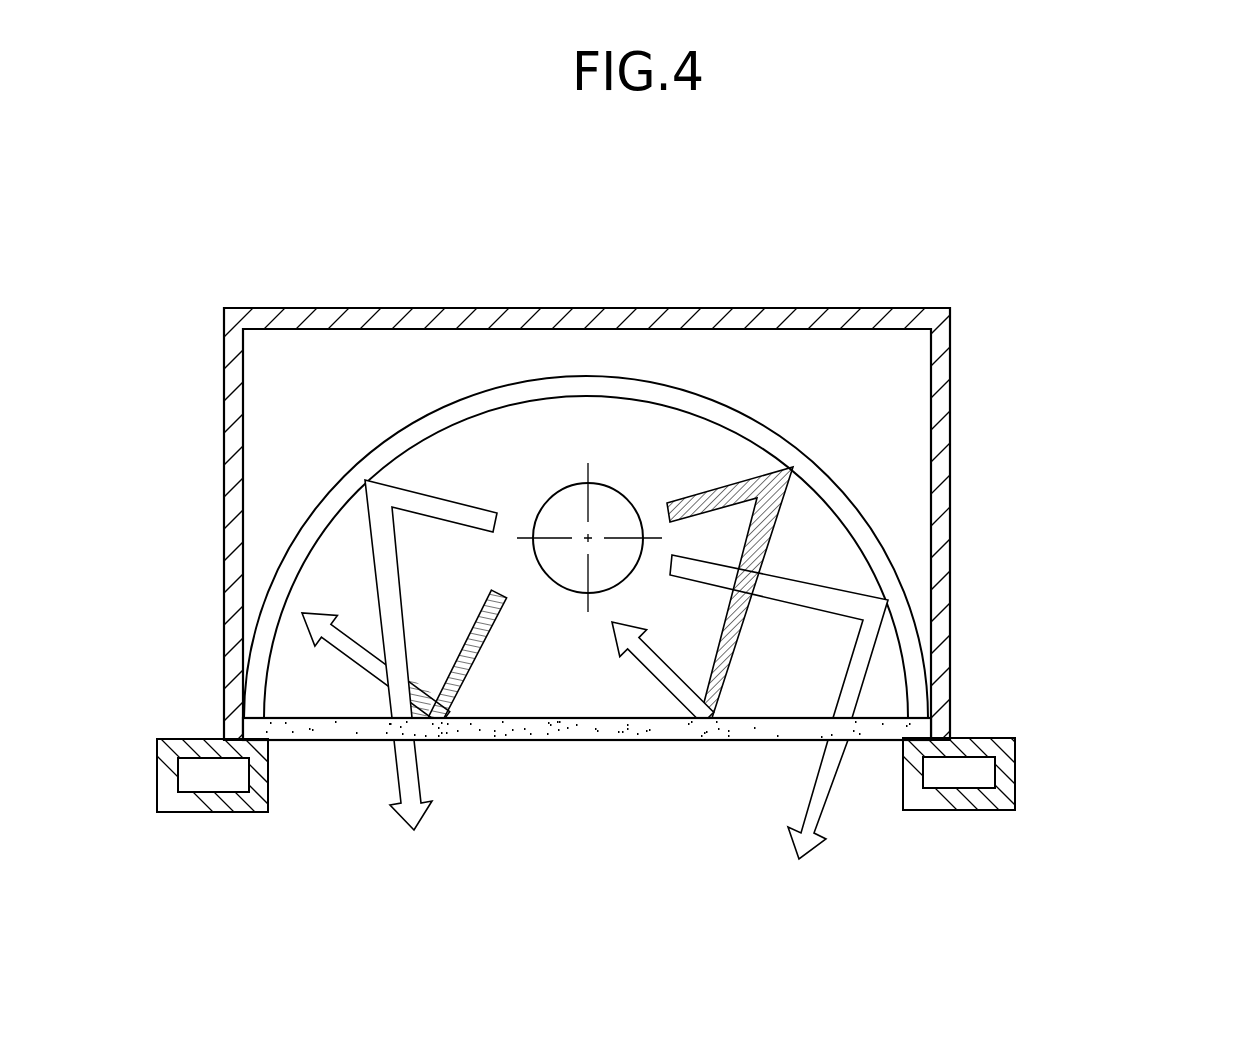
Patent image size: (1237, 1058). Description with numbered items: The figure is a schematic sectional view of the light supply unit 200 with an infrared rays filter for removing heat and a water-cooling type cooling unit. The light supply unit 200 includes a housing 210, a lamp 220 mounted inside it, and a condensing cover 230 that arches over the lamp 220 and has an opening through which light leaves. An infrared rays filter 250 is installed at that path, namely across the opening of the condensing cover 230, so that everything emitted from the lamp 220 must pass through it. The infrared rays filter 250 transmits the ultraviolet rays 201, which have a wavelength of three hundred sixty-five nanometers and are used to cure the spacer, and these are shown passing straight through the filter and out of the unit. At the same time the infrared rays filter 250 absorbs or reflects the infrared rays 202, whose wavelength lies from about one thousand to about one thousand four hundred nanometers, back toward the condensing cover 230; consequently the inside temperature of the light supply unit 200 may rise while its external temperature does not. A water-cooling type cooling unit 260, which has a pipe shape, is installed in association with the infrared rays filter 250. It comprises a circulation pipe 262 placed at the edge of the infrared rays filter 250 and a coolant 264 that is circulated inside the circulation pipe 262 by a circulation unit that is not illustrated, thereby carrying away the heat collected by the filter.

The light supply unit 200 is at (618, 529).
The housing 210 is at (940, 522).
The lamp 220 is at (604, 513).
The condensing cover 230 is at (835, 490).
The ultraviolet rays 201 is at (797, 814).
The infrared rays 202 is at (663, 670).
The infrared rays filter 250 is at (551, 728).
The water-cooling type cooling unit 260 is at (669, 819).
The circulation pipe 262 is at (976, 800).
The coolant 264 is at (231, 776).